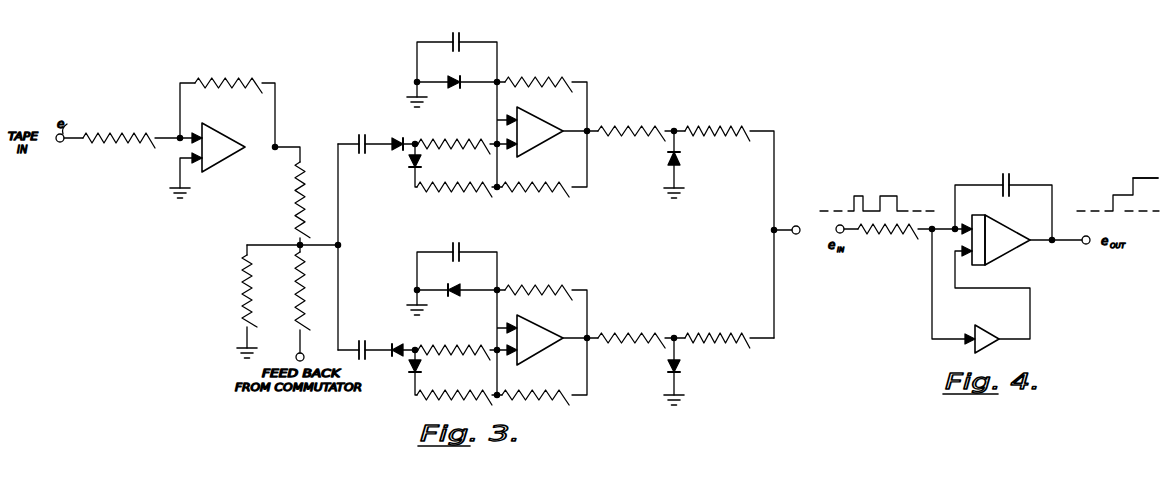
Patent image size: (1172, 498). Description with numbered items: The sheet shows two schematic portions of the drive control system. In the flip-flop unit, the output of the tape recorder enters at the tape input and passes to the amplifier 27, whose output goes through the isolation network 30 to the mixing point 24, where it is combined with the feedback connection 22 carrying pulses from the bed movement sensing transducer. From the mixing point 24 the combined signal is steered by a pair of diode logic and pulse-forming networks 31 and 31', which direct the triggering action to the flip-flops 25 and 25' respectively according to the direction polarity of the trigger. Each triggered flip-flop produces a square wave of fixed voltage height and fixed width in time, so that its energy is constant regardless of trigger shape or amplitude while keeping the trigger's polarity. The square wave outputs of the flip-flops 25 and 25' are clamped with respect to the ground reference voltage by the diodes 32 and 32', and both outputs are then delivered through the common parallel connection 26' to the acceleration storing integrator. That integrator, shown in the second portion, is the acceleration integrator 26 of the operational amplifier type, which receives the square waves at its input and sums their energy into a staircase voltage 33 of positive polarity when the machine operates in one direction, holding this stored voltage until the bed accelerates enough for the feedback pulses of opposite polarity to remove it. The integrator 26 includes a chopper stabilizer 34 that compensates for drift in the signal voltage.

In FIG. 3, the feedback connection 22 is at (296, 357).
In FIG. 3, the mixing point 24 is at (296, 244).
In FIG. 3, the flip-flop 25 is at (540, 136).
In FIG. 3, the flip-flop 25' is at (540, 338).
In FIG. 4, the acceleration integrator 26 is at (1018, 256).
In FIG. 3, the common parallel connection 26' is at (786, 220).
In FIG. 3, the amplifier 27 is at (215, 165).
In FIG. 3, the isolation network 30 is at (238, 293).
In FIG. 3, the diode logic and pulse-forming network 31 is at (393, 133).
In FIG. 3, the diode logic and pulse-forming network 31' is at (394, 340).
In FIG. 3, the diode 32 is at (659, 164).
In FIG. 3, the diode 32' is at (660, 371).
In FIG. 4, the staircase voltage 33 is at (1133, 179).
In FIG. 4, the chopper stabilizer 34 is at (989, 333).